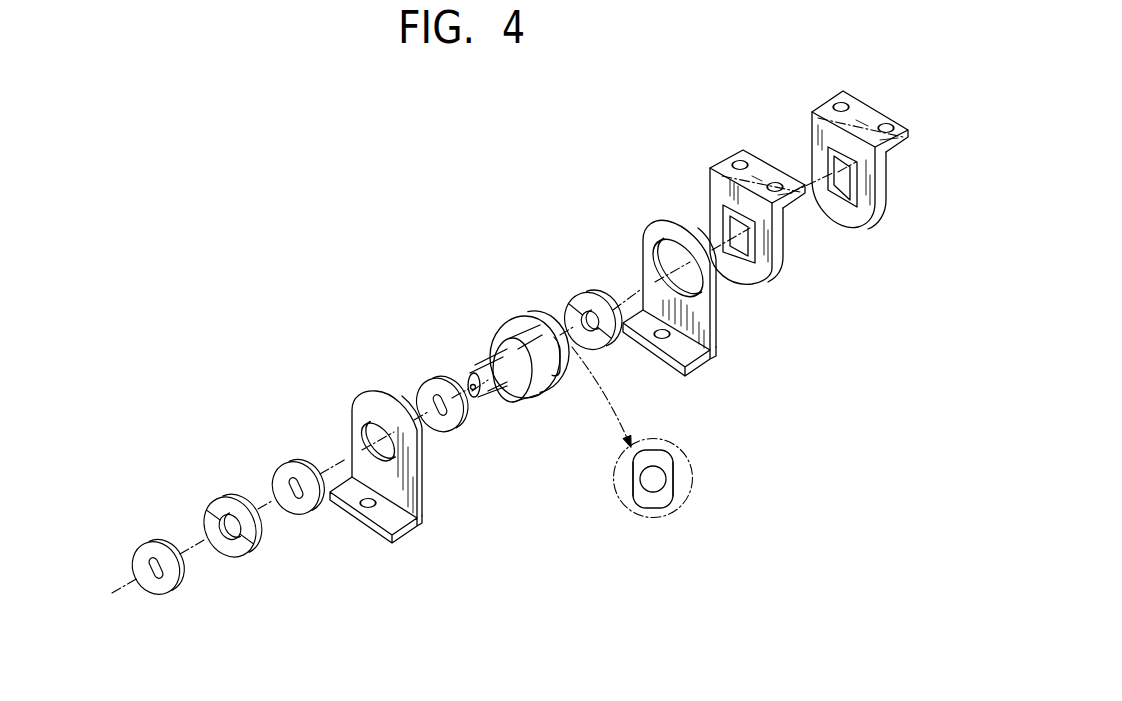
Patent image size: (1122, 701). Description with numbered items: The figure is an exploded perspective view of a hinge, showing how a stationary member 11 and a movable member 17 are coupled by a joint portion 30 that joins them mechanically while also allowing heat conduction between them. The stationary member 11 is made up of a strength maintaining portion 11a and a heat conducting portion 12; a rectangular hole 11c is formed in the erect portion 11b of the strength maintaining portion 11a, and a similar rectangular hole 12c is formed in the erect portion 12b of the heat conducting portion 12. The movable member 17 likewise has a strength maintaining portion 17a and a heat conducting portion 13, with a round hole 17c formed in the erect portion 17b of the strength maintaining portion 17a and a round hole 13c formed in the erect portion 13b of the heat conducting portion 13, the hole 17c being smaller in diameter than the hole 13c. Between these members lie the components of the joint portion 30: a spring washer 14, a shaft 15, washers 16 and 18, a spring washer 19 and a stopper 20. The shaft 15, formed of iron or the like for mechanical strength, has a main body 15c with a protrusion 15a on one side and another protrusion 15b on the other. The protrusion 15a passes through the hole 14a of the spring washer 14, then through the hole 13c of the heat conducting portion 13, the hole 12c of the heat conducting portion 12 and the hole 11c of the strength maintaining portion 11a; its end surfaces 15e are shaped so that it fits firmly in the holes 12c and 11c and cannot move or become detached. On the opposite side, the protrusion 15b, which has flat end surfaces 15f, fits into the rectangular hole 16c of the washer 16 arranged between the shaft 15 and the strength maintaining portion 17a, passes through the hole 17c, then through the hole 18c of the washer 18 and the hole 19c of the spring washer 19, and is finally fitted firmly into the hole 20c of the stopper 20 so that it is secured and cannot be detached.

The stationary member 11 is at (861, 190).
The strength maintaining portion 11a is at (830, 108).
The erect portion 11b is at (886, 199).
The rectangular hole 11c is at (839, 208).
The heat conducting portion 12 is at (726, 209).
The erect portion 12b is at (754, 278).
The rectangular hole 12c is at (726, 220).
The heat conducting portion 13 is at (677, 314).
The erect portion 13b is at (698, 334).
The round hole 13c is at (662, 258).
The spring washer 14 is at (614, 330).
The hole 14a is at (605, 345).
The shaft 15 is at (593, 405).
The protrusion 15a is at (632, 413).
The protrusion 15b is at (488, 408).
The main body 15c is at (552, 390).
The end surfaces 15e is at (633, 479).
The flat end surfaces 15f is at (488, 370).
The washer 16 is at (443, 409).
The hole 16c is at (436, 425).
The movable member 17 is at (549, 512).
The strength maintaining portion 17a is at (413, 527).
The erect portion 17b is at (408, 498).
The round hole 17c is at (367, 443).
The washer 18 is at (298, 500).
The hole 18c is at (289, 505).
The spring washer 19 is at (226, 559).
The hole 19c is at (228, 548).
The stopper 20 is at (150, 599).
The hole 20c is at (150, 588).
The joint portion 30 is at (444, 437).